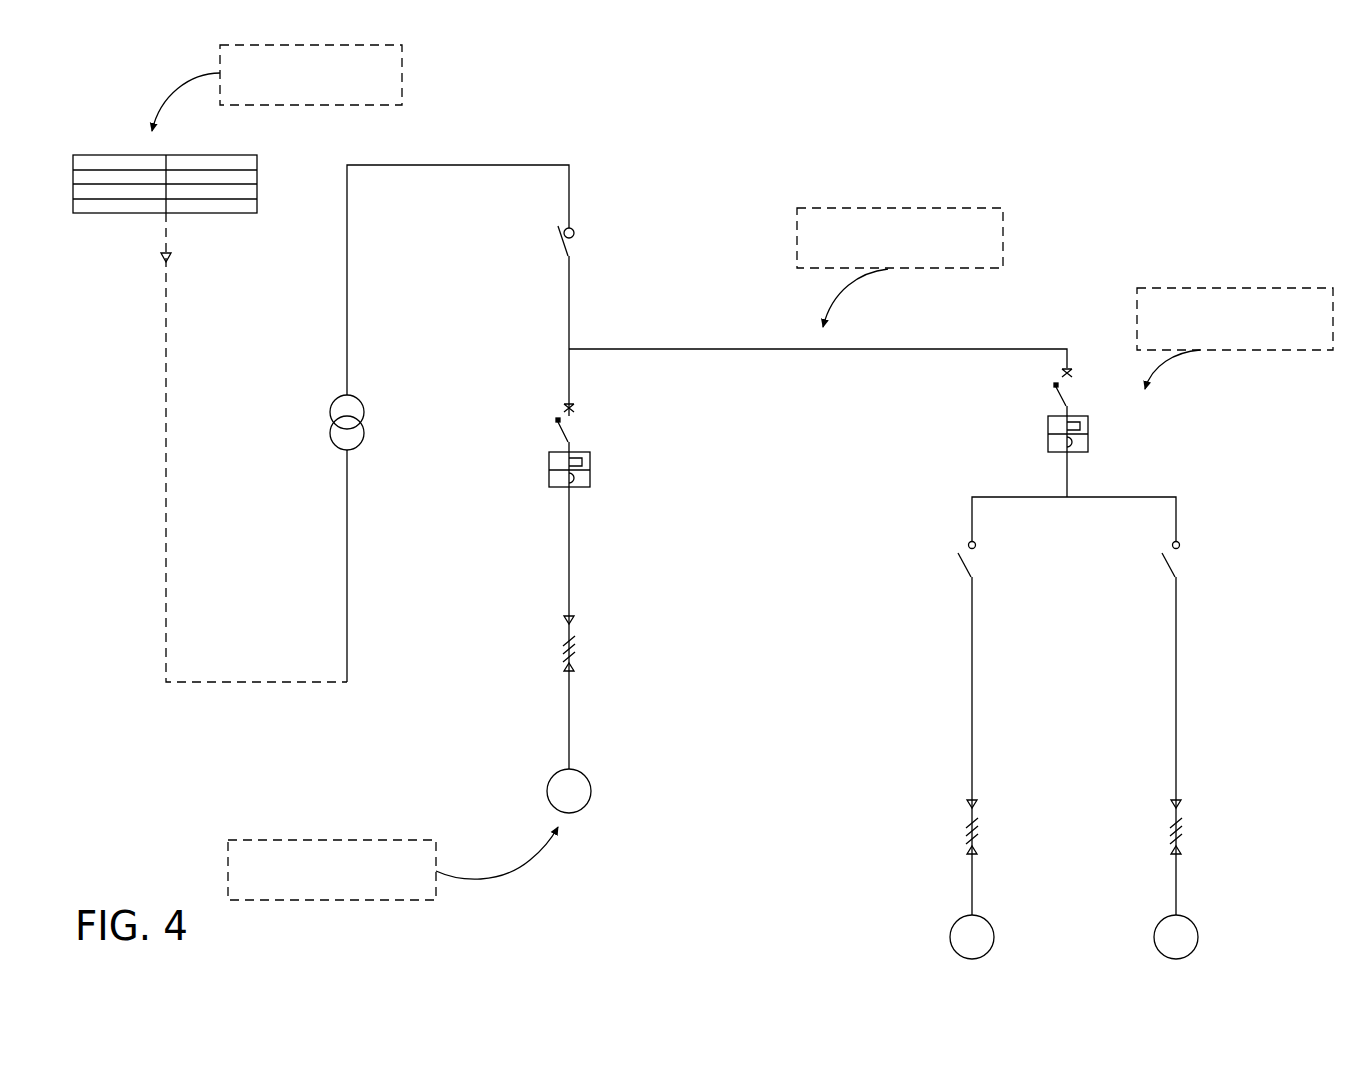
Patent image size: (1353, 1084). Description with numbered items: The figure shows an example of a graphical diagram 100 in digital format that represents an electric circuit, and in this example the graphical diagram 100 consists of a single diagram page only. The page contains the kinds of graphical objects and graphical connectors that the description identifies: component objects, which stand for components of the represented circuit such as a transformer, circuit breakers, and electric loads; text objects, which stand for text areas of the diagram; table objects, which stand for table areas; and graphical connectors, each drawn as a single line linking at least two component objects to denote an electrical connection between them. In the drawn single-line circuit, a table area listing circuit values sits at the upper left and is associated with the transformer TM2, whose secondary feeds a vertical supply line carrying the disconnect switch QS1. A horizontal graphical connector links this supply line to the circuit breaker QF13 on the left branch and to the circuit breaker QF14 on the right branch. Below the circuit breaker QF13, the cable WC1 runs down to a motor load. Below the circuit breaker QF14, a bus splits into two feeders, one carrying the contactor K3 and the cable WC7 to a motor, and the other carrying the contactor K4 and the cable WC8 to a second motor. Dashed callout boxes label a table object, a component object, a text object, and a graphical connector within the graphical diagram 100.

The graphical diagram 100 is at (990, 171).
The transformer TM2 is at (291, 420).
The disconnect switch QS1 is at (592, 241).
The circuit breaker QF13 is at (618, 445).
The circuit breaker QF14 is at (1112, 410).
The contactor K3 is at (942, 560).
The contactor K4 is at (1151, 560).
The cable WC1 is at (628, 642).
The cable WC7 is at (926, 828).
The cable WC8 is at (1139, 828).